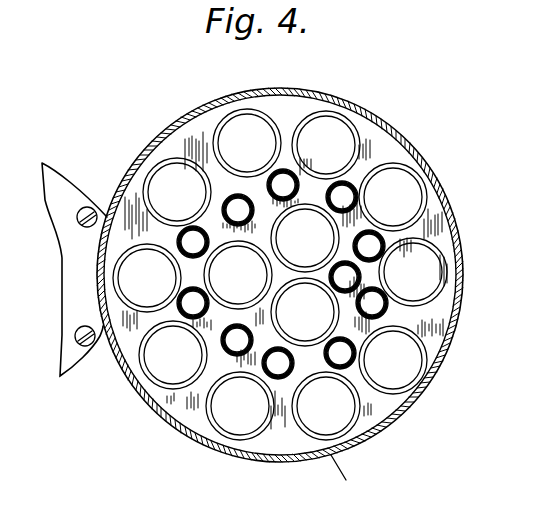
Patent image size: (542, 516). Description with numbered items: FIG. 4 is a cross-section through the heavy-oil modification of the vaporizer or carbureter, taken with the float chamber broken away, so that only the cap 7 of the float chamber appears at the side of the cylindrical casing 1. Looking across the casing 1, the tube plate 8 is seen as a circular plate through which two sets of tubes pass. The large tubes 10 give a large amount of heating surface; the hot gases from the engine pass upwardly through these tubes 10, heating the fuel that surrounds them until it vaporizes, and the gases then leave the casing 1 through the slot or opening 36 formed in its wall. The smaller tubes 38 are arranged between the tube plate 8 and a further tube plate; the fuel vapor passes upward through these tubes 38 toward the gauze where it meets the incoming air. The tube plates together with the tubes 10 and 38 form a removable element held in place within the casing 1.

The casing 1 is at (343, 482).
The cap 7 is at (70, 293).
The tube plate 8 is at (421, 333).
The tubes 10 is at (162, 160).
The slot 36 is at (458, 227).
The tubes 38 is at (284, 172).